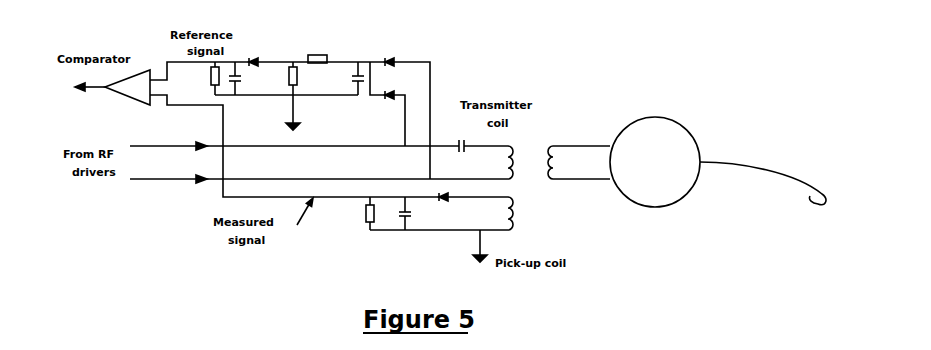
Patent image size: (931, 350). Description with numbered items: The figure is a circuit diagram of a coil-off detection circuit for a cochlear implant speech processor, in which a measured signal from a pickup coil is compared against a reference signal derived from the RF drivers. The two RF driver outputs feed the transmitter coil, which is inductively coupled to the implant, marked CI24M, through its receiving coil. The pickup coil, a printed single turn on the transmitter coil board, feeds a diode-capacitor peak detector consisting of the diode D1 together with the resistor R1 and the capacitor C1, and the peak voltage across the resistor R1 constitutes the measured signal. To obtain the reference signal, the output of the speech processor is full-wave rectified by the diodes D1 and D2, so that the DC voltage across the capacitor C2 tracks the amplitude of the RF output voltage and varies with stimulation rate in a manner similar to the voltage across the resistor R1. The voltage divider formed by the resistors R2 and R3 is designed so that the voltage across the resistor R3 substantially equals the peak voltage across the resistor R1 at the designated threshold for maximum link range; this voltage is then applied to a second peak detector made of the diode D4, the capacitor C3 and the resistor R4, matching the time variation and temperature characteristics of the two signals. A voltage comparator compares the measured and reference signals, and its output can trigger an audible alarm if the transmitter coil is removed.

The resistor R1 is at (358, 213).
The resistor R2 is at (317, 53).
The resistor R3 is at (300, 96).
The resistor R4 is at (202, 78).
The capacitor C1 is at (416, 213).
The capacitor C2 is at (347, 78).
The capacitor C3 is at (245, 78).
The diode D1 is at (419, 131).
The diode D2 is at (387, 52).
The diode D4 is at (253, 52).
The CI24M marker / transponder coil CI24M is at (687, 162).